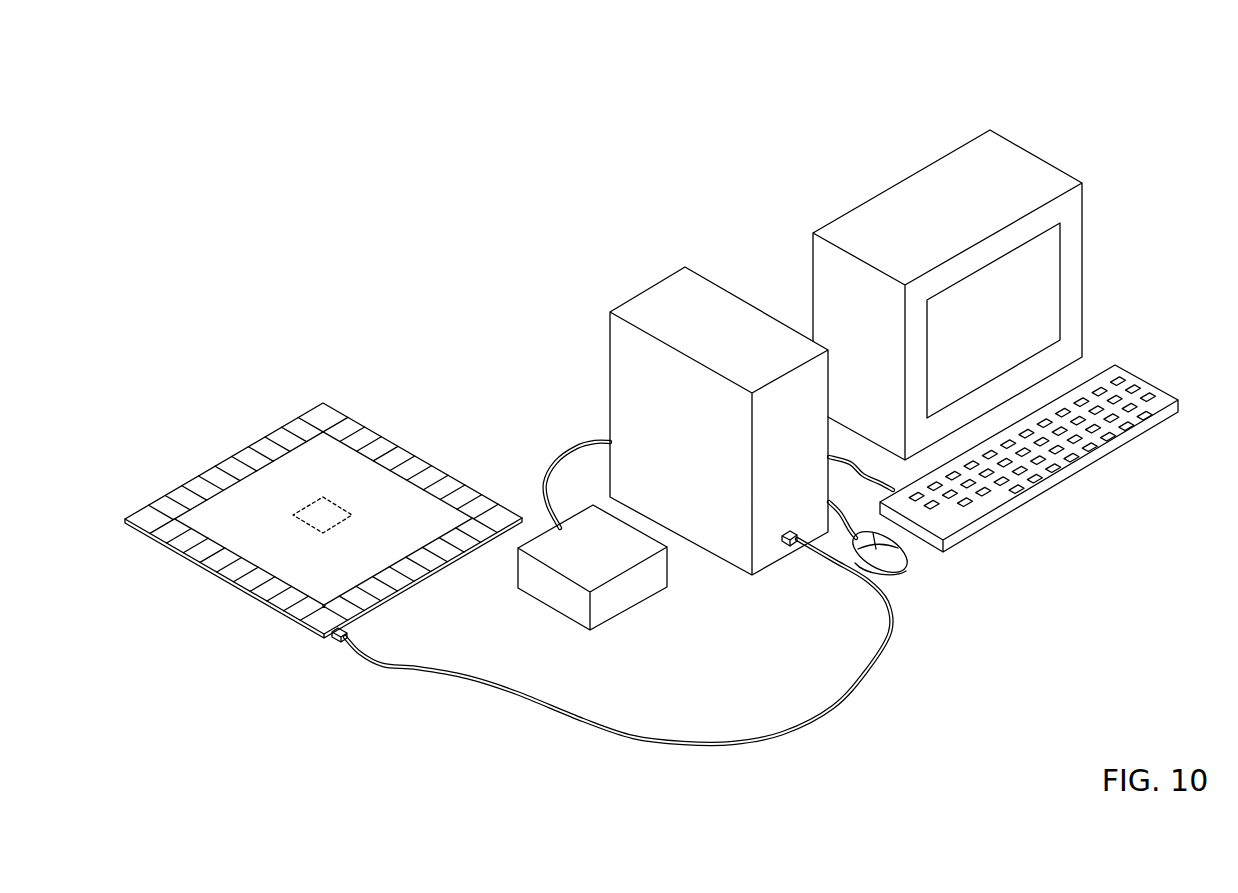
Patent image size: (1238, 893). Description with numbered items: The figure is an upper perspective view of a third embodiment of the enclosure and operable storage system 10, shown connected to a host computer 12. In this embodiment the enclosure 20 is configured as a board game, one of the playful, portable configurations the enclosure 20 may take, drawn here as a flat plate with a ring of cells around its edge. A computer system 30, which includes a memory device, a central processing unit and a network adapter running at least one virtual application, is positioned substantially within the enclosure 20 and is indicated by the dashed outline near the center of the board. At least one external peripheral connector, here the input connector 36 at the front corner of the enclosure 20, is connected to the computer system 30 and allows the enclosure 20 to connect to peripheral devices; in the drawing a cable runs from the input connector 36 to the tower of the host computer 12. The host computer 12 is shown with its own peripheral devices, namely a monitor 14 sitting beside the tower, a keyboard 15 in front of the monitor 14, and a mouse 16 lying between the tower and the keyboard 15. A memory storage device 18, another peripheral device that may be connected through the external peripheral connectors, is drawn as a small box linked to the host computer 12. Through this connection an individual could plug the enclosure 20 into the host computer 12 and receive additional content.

The enclosure and operable storage system 10 is at (358, 247).
The host computer 12 is at (688, 292).
The monitor 14 is at (1015, 167).
The keyboard 15 is at (1065, 471).
The mouse 16 is at (908, 567).
The memory storage device 18 is at (630, 587).
The enclosure 20 is at (283, 440).
The computer system 30 is at (353, 495).
The input connector 36 is at (328, 643).